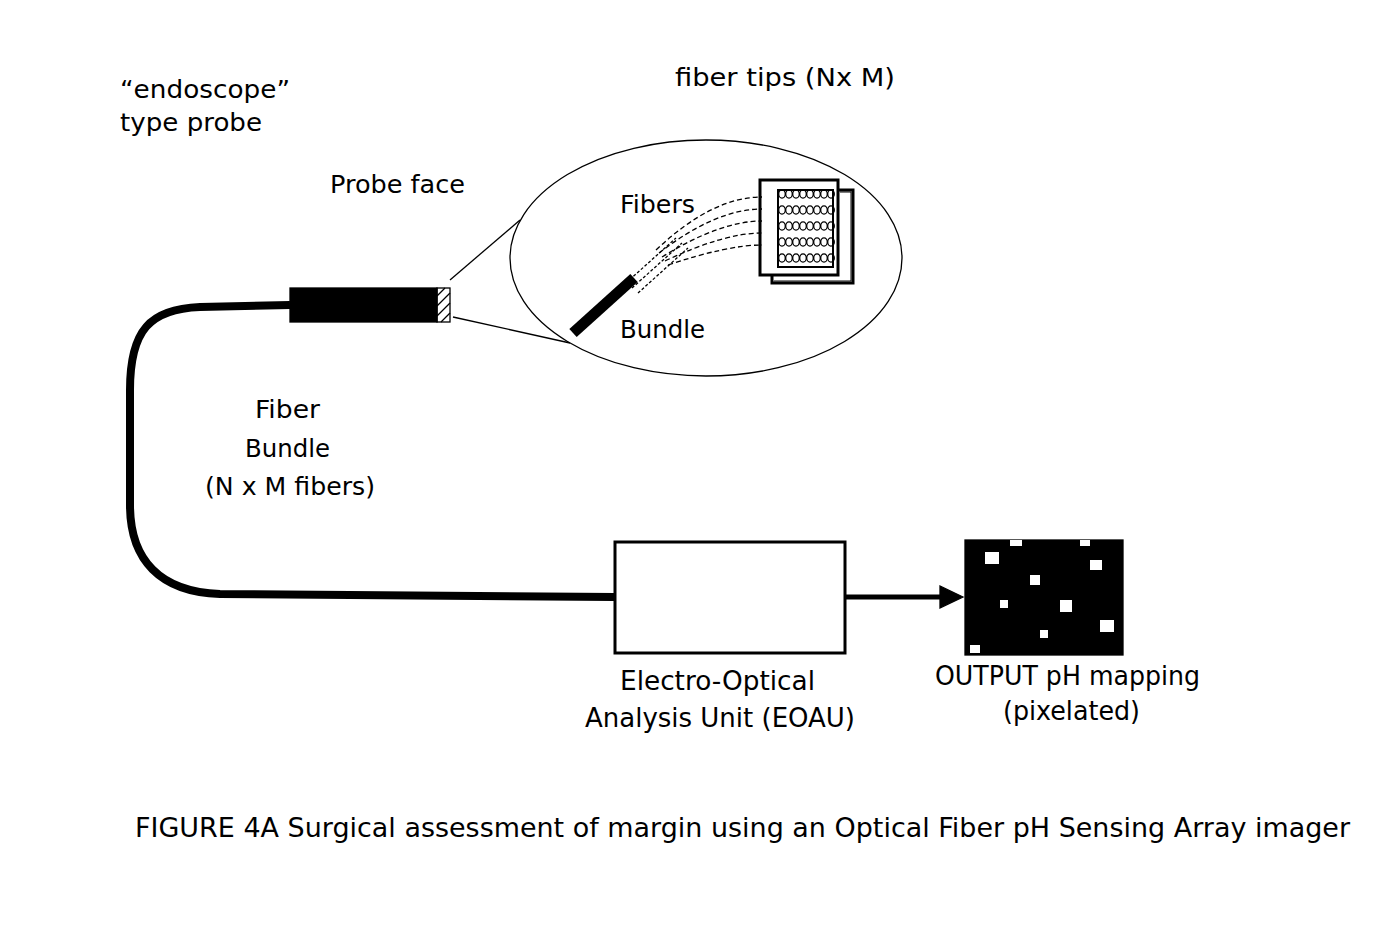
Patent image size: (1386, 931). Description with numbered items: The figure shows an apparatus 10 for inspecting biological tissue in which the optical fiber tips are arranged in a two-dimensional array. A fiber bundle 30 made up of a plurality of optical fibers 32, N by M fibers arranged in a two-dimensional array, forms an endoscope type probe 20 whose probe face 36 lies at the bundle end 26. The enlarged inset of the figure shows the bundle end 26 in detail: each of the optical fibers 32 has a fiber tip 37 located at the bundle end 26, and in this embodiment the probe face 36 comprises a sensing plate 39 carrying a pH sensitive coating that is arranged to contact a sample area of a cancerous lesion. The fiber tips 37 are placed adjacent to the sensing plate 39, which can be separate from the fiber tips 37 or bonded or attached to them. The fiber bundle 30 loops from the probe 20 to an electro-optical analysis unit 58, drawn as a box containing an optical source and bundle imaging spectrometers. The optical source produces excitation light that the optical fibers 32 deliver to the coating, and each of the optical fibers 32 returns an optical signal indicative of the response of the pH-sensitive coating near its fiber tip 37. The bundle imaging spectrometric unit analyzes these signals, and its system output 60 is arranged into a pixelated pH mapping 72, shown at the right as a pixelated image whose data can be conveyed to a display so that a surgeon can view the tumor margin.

The apparatus 10 is at (512, 140).
The endoscope type probe 20 is at (190, 150).
The bundle end 26 is at (735, 258).
The fiber bundle 30 is at (148, 358).
The optical fibers 32 is at (657, 256).
The probe face 36 is at (440, 285).
The fiber tip 37 is at (810, 180).
The sensing plate 39 is at (851, 231).
The electro-optical analysis unit 58 is at (690, 541).
The system output 60 is at (886, 595).
The pixelated pH mapping 72 is at (1125, 598).